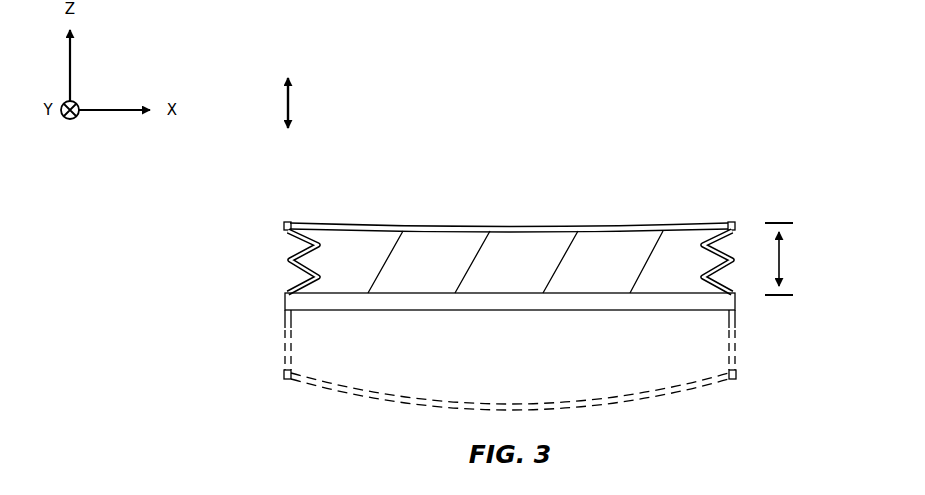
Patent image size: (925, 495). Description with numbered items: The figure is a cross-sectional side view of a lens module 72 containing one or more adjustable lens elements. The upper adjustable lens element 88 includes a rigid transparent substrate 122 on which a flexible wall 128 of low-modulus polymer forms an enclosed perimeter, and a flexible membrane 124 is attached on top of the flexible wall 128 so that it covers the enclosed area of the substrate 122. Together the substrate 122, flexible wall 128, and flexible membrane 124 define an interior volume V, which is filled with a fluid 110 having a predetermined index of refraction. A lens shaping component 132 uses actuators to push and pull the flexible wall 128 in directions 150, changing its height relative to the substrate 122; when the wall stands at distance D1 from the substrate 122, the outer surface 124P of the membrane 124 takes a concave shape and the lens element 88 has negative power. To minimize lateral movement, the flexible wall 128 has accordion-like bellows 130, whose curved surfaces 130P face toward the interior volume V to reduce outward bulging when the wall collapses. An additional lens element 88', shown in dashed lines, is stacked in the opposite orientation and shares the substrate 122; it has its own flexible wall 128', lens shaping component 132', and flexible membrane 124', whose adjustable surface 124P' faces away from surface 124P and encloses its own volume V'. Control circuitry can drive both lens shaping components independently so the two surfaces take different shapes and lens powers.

The lens module 72 is at (688, 96).
The adjustable lens element 88 is at (514, 252).
The additional adjustable lens element 88' is at (510, 387).
The fluid 110 is at (545, 240).
The substrate 122 is at (735, 305).
The flexible membrane 124 is at (509, 193).
The flexible membrane 124' is at (510, 418).
The outer surface 124P is at (383, 182).
The adjustable surface 124P' is at (703, 423).
The flexible wall 128 is at (471, 295).
The flexible wall 128' is at (471, 340).
The bellows 130 is at (328, 248).
The curved surfaces 130P is at (703, 247).
The lens shaping component 132 is at (504, 218).
The lens shaping component 132' is at (549, 379).
The directions 150 is at (288, 105).
The distance D1 is at (791, 259).
The interior volume V is at (510, 263).
The volume (deployed state) V' is at (512, 351).